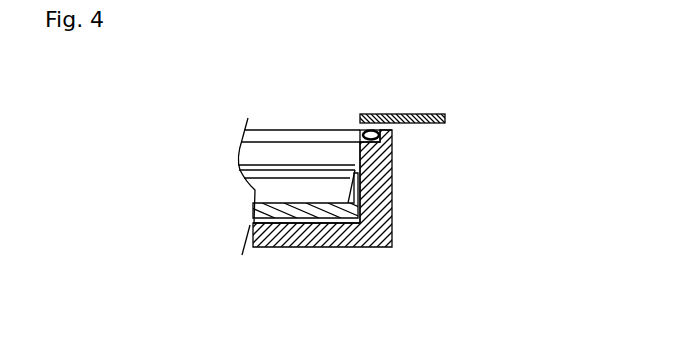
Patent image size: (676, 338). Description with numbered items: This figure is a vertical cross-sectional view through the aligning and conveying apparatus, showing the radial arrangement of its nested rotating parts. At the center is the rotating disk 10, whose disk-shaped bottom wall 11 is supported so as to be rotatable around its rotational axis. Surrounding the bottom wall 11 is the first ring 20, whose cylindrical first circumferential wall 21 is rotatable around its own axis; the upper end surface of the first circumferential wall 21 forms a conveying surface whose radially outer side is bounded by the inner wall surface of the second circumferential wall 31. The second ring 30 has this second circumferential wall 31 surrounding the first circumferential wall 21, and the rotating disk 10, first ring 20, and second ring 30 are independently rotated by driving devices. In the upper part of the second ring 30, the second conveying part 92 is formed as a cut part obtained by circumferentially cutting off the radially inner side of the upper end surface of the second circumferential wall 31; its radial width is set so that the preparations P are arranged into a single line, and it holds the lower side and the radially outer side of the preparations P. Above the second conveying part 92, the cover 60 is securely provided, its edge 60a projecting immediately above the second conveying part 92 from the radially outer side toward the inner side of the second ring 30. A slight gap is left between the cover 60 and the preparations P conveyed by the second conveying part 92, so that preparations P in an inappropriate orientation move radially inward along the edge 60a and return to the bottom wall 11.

The rotating disk 10 is at (285, 163).
The bottom wall 11 is at (262, 172).
The second conveying part 92 is at (319, 135).
The first ring 20 is at (323, 210).
The first circumferential wall 21 is at (366, 193).
The second ring 30 is at (421, 219).
The second circumferential wall 31 is at (382, 182).
The cover 60 is at (420, 118).
The edge 60a is at (358, 128).
The preparations P is at (363, 136).